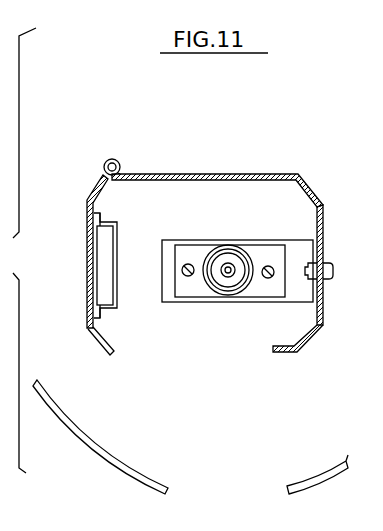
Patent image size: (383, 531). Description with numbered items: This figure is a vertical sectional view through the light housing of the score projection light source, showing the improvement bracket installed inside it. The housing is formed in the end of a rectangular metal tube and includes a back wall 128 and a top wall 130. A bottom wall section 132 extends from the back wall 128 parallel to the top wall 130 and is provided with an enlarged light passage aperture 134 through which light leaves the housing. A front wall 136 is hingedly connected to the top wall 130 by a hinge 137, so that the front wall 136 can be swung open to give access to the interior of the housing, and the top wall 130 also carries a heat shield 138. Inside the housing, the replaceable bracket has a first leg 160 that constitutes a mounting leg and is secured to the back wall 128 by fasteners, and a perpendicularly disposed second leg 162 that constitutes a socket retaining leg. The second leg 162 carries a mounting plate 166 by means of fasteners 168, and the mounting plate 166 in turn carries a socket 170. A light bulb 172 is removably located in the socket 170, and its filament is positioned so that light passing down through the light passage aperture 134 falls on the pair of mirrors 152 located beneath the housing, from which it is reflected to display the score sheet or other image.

The back wall 128 is at (324, 215).
The top wall 130 is at (212, 174).
The bottom wall section 132 is at (283, 352).
The light passage aperture 134 is at (157, 340).
The front wall 136 is at (87, 258).
The hinge 137 is at (113, 159).
The heat shield 138 is at (116, 247).
The mirrors 152 is at (93, 455).
The first leg 160 is at (308, 246).
The second leg 162 is at (163, 240).
The mounting plate 166 is at (194, 291).
The fasteners 168 is at (190, 263).
The socket 170 is at (237, 246).
The light bulb 172 is at (240, 284).